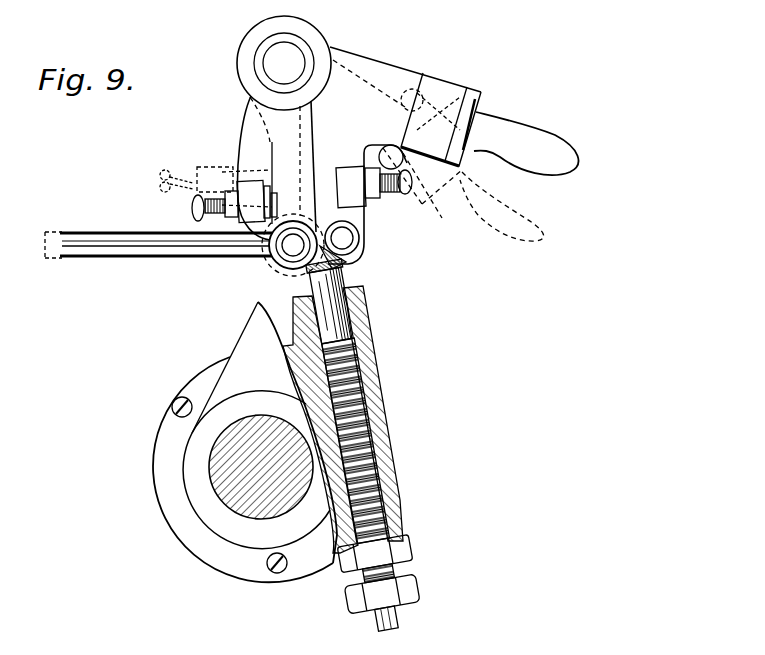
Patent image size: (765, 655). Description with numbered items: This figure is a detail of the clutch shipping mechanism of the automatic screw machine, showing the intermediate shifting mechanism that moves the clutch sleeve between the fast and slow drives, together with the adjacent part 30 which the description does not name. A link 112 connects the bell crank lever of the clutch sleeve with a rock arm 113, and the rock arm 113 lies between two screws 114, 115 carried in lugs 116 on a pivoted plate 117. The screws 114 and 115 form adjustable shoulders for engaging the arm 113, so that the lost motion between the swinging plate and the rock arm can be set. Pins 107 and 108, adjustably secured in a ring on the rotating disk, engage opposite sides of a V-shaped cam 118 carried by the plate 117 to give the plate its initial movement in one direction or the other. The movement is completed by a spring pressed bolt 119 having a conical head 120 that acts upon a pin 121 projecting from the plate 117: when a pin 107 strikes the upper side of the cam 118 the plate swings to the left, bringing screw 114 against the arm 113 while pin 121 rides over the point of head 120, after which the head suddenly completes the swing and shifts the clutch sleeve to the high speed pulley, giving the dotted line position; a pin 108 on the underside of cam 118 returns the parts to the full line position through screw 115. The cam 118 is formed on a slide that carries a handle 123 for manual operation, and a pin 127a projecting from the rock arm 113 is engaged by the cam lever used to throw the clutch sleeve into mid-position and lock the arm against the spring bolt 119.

The shaft 30 is at (243, 423).
The pin 107 is at (413, 98).
The pin 108 is at (392, 146).
The link 112 is at (154, 258).
The rock arm 113 is at (301, 113).
The screw 114 is at (338, 180).
The screw 115 is at (290, 173).
The lug 116 is at (286, 194).
The pivoted plate 117 is at (367, 66).
The V-shaped cam 118 is at (443, 113).
The spring pressed bolt 119 is at (342, 283).
The conical head 120 is at (347, 265).
The pin 121 is at (346, 237).
The handle 123 is at (560, 149).
The pin 127a is at (292, 251).